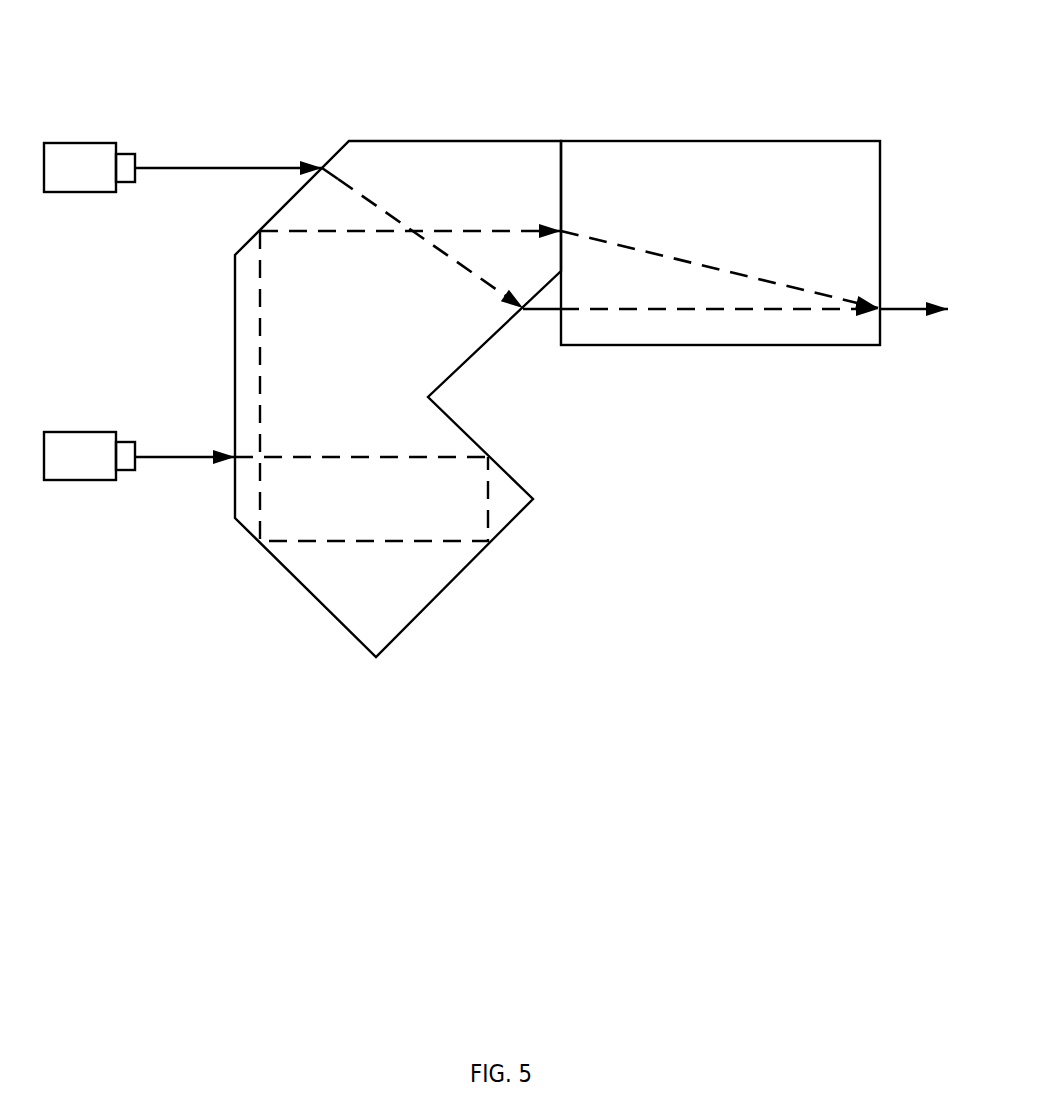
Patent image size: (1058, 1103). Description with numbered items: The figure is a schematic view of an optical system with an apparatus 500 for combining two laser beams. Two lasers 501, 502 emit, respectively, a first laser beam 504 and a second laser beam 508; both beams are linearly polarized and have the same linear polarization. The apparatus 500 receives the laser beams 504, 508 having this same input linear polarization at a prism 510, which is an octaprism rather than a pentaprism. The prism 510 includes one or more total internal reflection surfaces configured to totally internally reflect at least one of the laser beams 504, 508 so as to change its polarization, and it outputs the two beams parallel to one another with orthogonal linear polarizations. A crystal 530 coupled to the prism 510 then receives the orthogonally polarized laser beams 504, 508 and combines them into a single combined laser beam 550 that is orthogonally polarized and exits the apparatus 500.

The apparatus 500 is at (660, 105).
The laser 501 is at (68, 430).
The laser 502 is at (70, 142).
The first laser beam 504 is at (145, 457).
The second laser beam 508 is at (172, 167).
The prism 510 is at (326, 640).
The crystal 530 is at (728, 365).
The combined laser beam 550 is at (893, 305).